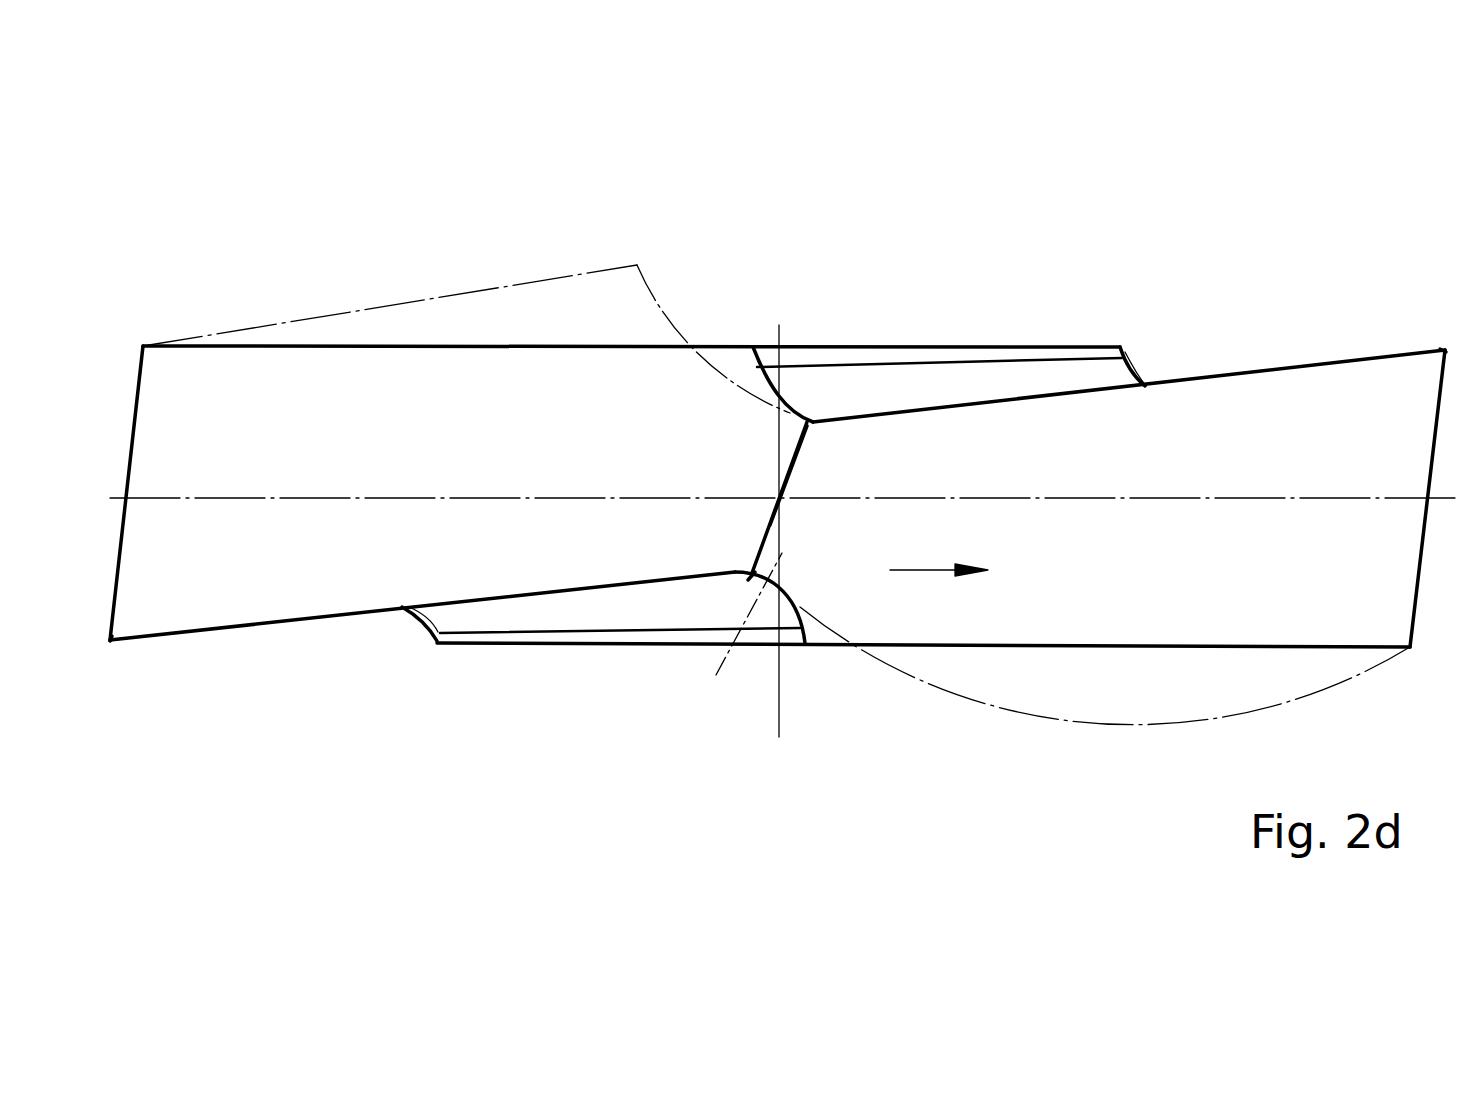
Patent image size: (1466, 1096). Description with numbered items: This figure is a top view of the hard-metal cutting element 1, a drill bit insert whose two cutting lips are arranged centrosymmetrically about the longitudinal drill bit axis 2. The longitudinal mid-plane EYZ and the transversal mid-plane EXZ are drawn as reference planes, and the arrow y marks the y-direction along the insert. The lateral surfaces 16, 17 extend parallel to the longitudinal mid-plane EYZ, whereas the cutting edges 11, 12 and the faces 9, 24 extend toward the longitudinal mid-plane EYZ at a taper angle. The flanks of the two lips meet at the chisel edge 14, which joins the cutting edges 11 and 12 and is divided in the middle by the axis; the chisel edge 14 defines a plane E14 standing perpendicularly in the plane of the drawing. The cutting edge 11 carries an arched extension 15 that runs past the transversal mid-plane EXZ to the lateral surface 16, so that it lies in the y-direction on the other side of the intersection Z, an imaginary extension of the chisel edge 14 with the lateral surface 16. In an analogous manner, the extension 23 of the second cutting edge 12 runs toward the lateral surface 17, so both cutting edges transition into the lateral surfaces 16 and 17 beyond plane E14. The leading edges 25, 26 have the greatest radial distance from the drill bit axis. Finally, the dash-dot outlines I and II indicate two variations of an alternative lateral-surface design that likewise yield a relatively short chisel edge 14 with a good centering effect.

The cutting element 1 is at (1229, 264).
The longitudinal drill bit axis 2 is at (790, 473).
The face 9 is at (380, 613).
The cutting edge 11 is at (353, 617).
The second cutting edge 12 is at (1197, 378).
The chisel edge 14 is at (788, 452).
The extension 15 is at (755, 575).
The lateral surface 16 is at (1140, 647).
The lateral surface 17 is at (490, 346).
The extension of the second cutting edge 23 is at (793, 413).
The face 24 is at (1172, 383).
The leading edge 25 is at (110, 640).
The leading edge 26 is at (1445, 350).
The plane defined by the chisel edge E14 is at (755, 533).
The intersection Z is at (728, 647).
The transversal mid-plane EXZ is at (814, 531).
The longitudinal mid-plane EYZ is at (1262, 498).
The y-direction y is at (927, 570).
The configuration I is at (605, 268).
The configuration II is at (1082, 725).